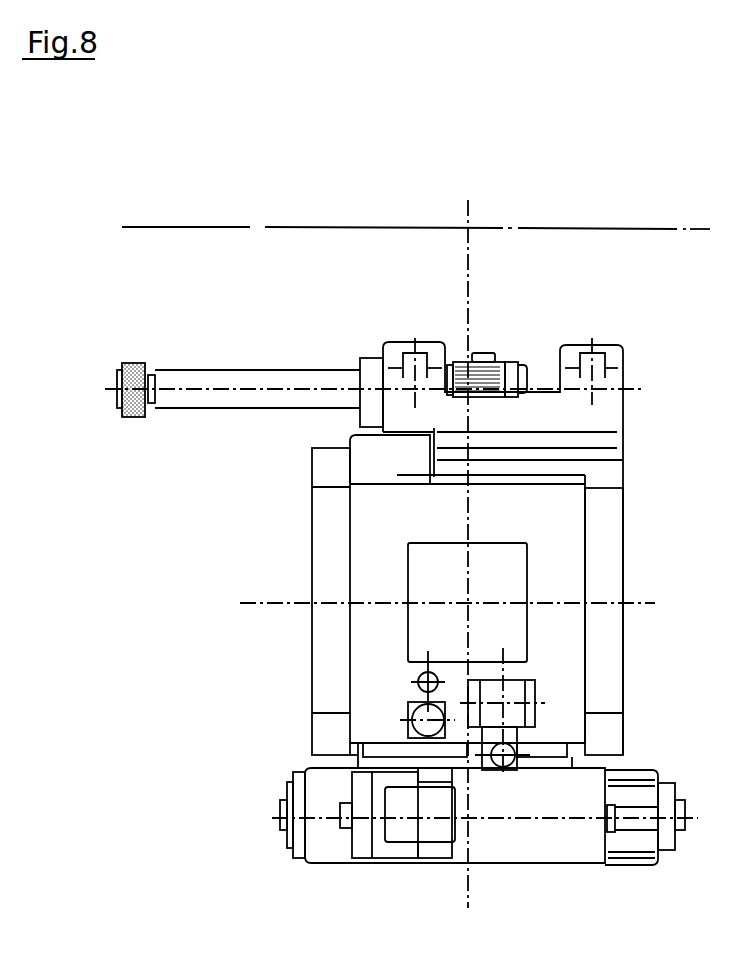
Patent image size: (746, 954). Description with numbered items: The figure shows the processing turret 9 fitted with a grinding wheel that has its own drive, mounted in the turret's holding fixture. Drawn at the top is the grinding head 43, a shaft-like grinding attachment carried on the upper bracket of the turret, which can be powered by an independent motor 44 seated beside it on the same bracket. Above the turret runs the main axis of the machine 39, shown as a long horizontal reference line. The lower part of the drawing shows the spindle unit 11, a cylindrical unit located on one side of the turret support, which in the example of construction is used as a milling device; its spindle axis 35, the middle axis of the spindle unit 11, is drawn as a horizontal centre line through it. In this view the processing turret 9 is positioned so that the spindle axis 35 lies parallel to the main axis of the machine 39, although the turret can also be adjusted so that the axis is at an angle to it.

The processing turret 9 is at (368, 622).
The spindle unit 11 is at (508, 853).
The spindle axis 35 is at (567, 818).
The main axis of the machine 39 is at (212, 226).
The grinding head 43 is at (314, 378).
The motor 44 is at (511, 363).